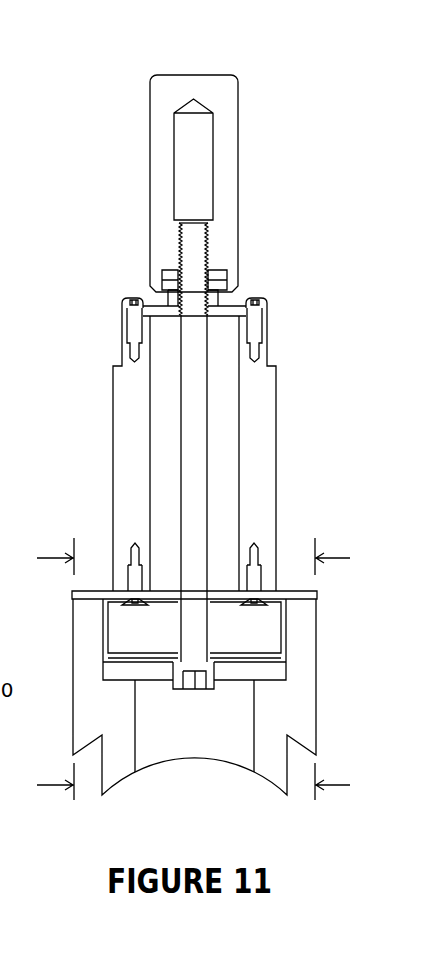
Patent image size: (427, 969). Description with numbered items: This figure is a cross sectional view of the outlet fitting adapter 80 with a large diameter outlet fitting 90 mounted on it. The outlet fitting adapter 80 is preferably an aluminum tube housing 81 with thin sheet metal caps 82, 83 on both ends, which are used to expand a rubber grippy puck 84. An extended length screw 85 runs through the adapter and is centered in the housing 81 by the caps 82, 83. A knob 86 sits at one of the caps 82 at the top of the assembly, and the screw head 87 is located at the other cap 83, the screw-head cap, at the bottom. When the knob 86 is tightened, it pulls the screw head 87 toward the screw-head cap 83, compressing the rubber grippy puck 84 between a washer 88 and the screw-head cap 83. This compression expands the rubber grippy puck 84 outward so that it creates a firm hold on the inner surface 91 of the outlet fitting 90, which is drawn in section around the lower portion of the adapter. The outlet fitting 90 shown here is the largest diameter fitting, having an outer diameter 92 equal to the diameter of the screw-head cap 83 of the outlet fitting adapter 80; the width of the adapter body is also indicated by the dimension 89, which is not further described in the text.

The outlet fitting adapter 80 is at (296, 208).
The tube housing 81 is at (256, 474).
The cap 82 is at (227, 298).
The screw-head cap 83 is at (297, 592).
The rubber grippy puck 84 is at (260, 630).
The extended length screw 85 is at (200, 464).
The knob 86 is at (217, 93).
The screw head 87 is at (199, 689).
The washer 88 is at (257, 662).
The width dimension 89 is at (350, 558).
The outlet fitting 90 is at (390, 757).
The inner surface 91 is at (103, 632).
The outer diameter 92 is at (350, 785).